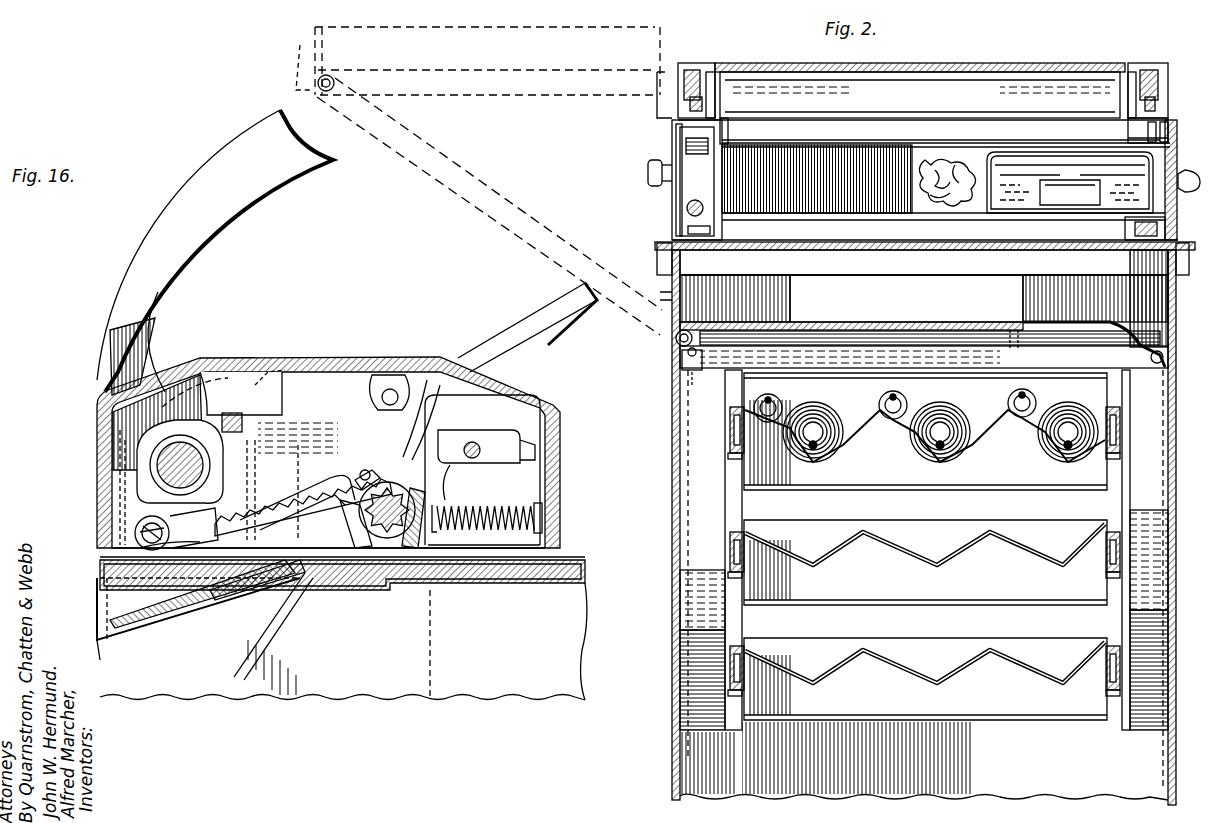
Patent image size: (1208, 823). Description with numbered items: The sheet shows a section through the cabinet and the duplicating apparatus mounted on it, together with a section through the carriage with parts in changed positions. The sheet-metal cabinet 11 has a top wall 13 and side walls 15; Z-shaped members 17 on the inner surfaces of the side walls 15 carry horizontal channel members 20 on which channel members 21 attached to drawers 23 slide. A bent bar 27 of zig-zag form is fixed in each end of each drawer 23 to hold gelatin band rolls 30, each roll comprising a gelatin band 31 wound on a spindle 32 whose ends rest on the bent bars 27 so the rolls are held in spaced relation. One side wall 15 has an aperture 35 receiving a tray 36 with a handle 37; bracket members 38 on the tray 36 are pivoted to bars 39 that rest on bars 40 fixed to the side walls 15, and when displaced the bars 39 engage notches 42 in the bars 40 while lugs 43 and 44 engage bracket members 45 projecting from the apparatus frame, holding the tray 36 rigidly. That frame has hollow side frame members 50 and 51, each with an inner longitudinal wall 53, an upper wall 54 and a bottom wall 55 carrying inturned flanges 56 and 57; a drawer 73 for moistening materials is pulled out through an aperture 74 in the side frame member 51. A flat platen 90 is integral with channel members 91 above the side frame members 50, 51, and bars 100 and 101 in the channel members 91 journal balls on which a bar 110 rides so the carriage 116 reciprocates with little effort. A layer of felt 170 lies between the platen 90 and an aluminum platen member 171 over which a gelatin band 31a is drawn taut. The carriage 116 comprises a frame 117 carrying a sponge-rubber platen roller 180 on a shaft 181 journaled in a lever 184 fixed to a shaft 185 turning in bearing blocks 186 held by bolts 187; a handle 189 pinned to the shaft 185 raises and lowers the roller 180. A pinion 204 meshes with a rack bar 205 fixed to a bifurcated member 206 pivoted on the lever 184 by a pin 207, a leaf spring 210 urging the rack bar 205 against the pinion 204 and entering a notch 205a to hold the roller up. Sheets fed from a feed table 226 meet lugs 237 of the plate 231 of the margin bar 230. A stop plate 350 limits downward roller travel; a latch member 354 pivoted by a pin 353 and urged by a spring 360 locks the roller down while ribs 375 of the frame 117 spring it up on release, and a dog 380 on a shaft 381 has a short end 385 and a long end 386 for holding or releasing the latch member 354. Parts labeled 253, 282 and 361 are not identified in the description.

In FIG. 2, the cabinet 11 is at (666, 749).
In FIG. 2, the top wall 13 is at (843, 258).
In FIG. 2, the side walls 15 is at (672, 474).
In FIG. 2, the Z-shaped members 17 is at (1122, 620).
In FIG. 2, the channel members 20 is at (730, 432).
In FIG. 2, the channel members 21 is at (730, 465).
In FIG. 2, the drawers 23 is at (760, 490).
In FIG. 2, the bent bar 27 is at (866, 425).
In FIG. 2, the gelatin band rolls 30 is at (815, 400).
In FIG. 2, the gelatin band 31 is at (778, 398).
In FIG. 2, the spindles 32 is at (765, 398).
In FIG. 2, the aperture 35 is at (672, 348).
In FIG. 2, the tray 36 is at (948, 280).
In FIG. 16, the tray 36 is at (314, 32).
In FIG. 2, the handle 37 is at (665, 300).
In FIG. 2, the bracket members 38 is at (695, 332).
In FIG. 16, the bracket members 38 is at (340, 80).
In FIG. 2, the bars 39 is at (888, 335).
In FIG. 16, the bars 39 is at (495, 190).
In FIG. 2, the bars 40 is at (960, 360).
In FIG. 2, the notches 42 is at (710, 362).
In FIG. 2, the lug 43 is at (1010, 334).
In FIG. 2, the lug 44 is at (1040, 334).
In FIG. 2, the bracket members 45 is at (680, 92).
In FIG. 2, the side frame member 50 is at (672, 195).
In FIG. 2, the side frame member 51 is at (1160, 128).
In FIG. 2, the inner longitudinal wall 53 is at (725, 140).
In FIG. 2, the upper wall 54 is at (700, 132).
In FIG. 2, the bottom wall 55 is at (712, 230).
In FIG. 2, the flange 56 is at (678, 128).
In FIG. 2, the flange 57 is at (672, 232).
In FIG. 2, the drawer 73 is at (788, 210).
In FIG. 2, the aperture 74 is at (1168, 140).
In FIG. 2, the platen 90 is at (962, 78).
In FIG. 16, the platen 90 is at (475, 588).
In FIG. 2, the channel members 91 is at (692, 68).
In FIG. 2, the bars 100 is at (704, 76).
In FIG. 2, the bars 101 is at (714, 70).
In FIG. 2, the bar 110 is at (722, 106).
In FIG. 16, the carriage 116 is at (565, 529).
In FIG. 16, the carriage frame 117 is at (340, 356).
In FIG. 16, the felt layer 170 is at (590, 583).
In FIG. 16, the platen member 171 is at (588, 562).
In FIG. 16, the platen roller 180 is at (355, 442).
In FIG. 16, the shaft 181 is at (290, 485).
In FIG. 16, the lever 184 is at (262, 465).
In FIG. 16, the shaft 185 is at (157, 465).
In FIG. 16, the bearing blocks 186 is at (137, 440).
In FIG. 16, the bolts 187 is at (262, 390).
In FIG. 16, the handle 189 is at (235, 206).
In FIG. 16, the pinion 204 is at (382, 520).
In FIG. 16, the rack bar 205 is at (382, 516).
In FIG. 16, the notch 205a is at (362, 470).
In FIG. 16, the bifurcated member 206 is at (175, 551).
In FIG. 16, the pin 207 is at (130, 520).
In FIG. 16, the leaf spring 210 is at (500, 405).
In FIG. 16, the feed table 226 is at (508, 335).
In FIG. 16, the margin bar 230 is at (183, 615).
In FIG. 16, the plate 231 is at (135, 620).
In FIG. 16, the lugs 237 is at (185, 422).
In FIG. 2, the pin 253 is at (686, 210).
In FIG. 2, the knob 282 is at (648, 150).
In FIG. 16, the gelatin band 31a is at (290, 630).
In FIG. 16, the stop plate 350 is at (250, 582).
In FIG. 16, the pin 353 is at (392, 388).
In FIG. 16, the latch member 354 is at (428, 380).
In FIG. 16, the spring 360 is at (545, 503).
In FIG. 16, the spring seat 361 is at (430, 515).
In FIG. 16, the ribs 375 is at (120, 475).
In FIG. 16, the dog 380 is at (522, 452).
In FIG. 16, the shaft 381 is at (482, 447).
In FIG. 16, the short end 385 is at (461, 482).
In FIG. 16, the long end 386 is at (528, 458).